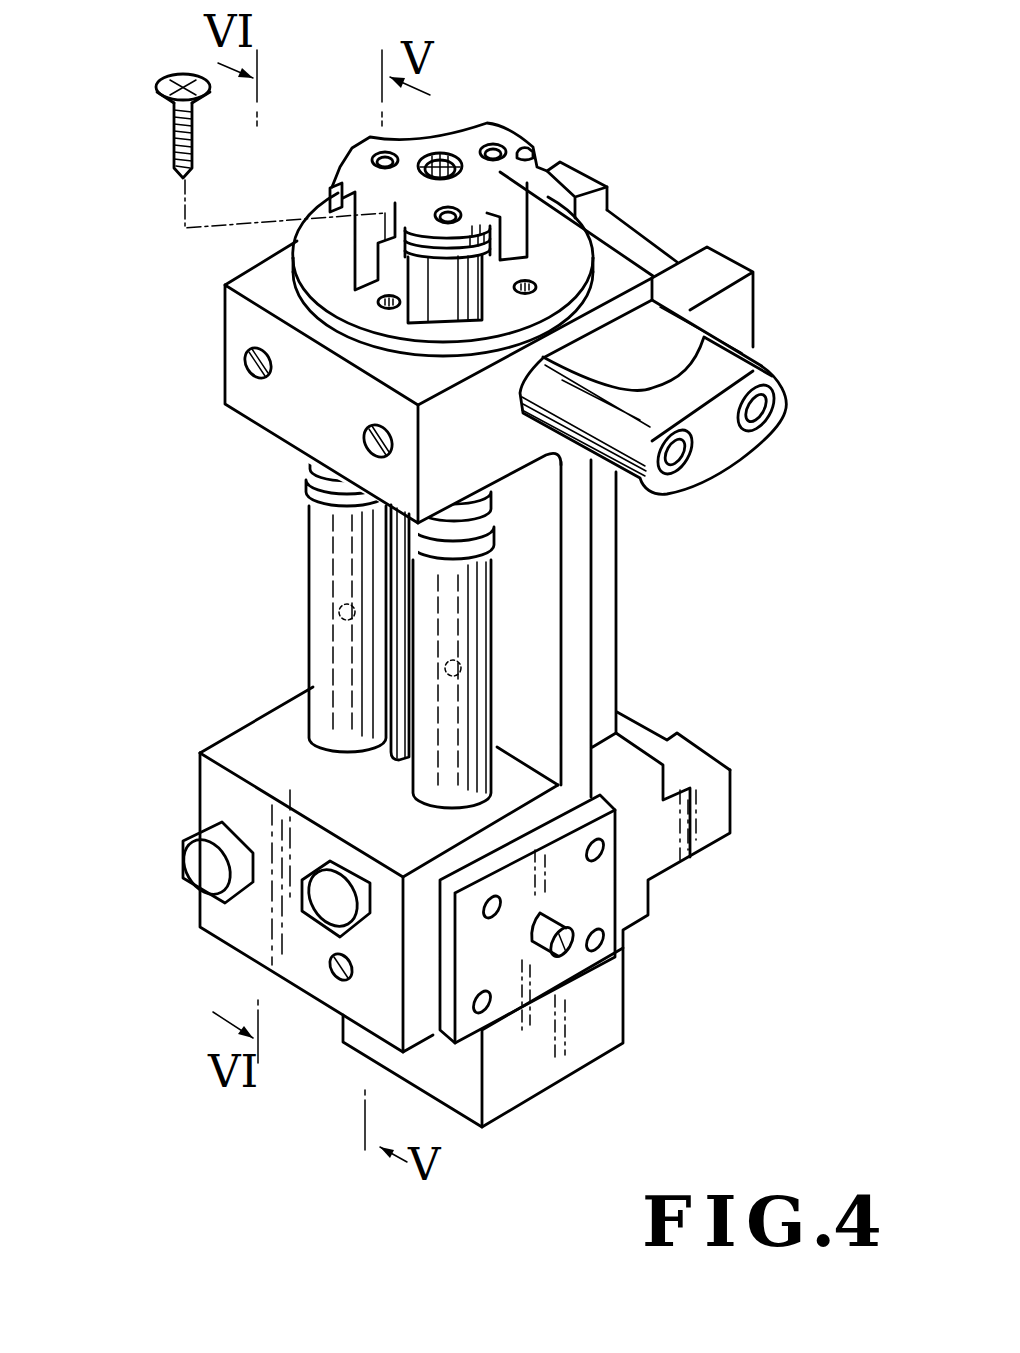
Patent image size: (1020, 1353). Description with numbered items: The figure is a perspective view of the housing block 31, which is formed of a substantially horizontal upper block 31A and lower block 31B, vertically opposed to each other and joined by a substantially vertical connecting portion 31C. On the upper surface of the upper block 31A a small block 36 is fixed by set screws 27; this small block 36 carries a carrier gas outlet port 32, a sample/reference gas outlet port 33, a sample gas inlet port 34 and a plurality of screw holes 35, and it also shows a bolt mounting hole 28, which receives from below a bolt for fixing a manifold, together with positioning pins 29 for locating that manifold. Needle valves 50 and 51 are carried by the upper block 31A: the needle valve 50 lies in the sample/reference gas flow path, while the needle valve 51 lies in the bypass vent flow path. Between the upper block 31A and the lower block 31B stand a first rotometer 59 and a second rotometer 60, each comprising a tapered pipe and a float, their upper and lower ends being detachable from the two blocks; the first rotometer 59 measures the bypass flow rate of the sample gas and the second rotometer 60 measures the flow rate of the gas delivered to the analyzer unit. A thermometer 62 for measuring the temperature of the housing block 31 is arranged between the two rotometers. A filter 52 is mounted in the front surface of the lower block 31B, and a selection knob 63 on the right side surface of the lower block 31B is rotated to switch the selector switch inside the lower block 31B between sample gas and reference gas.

The set screws 27 is at (160, 86).
The bolt mounting hole 28 is at (443, 152).
The positioning pins 29 is at (545, 165).
The housing block 31 is at (630, 963).
The upper block 31A is at (222, 332).
The lower block 31B is at (220, 793).
The connecting portion 31C is at (585, 652).
The carrier gas outlet port 32 is at (503, 127).
The sample/reference gas outlet port 33 is at (376, 158).
The sample gas inlet port 34 is at (448, 224).
The screw holes 35 is at (532, 285).
The small block 36 is at (577, 272).
The needle valve 50 is at (250, 368).
The needle valve 51 is at (366, 443).
The filter 52 is at (330, 975).
The first rotometer 59 is at (482, 655).
The second rotometer 60 is at (309, 640).
The thermometer 62 is at (392, 757).
The selection knob 63 is at (575, 958).